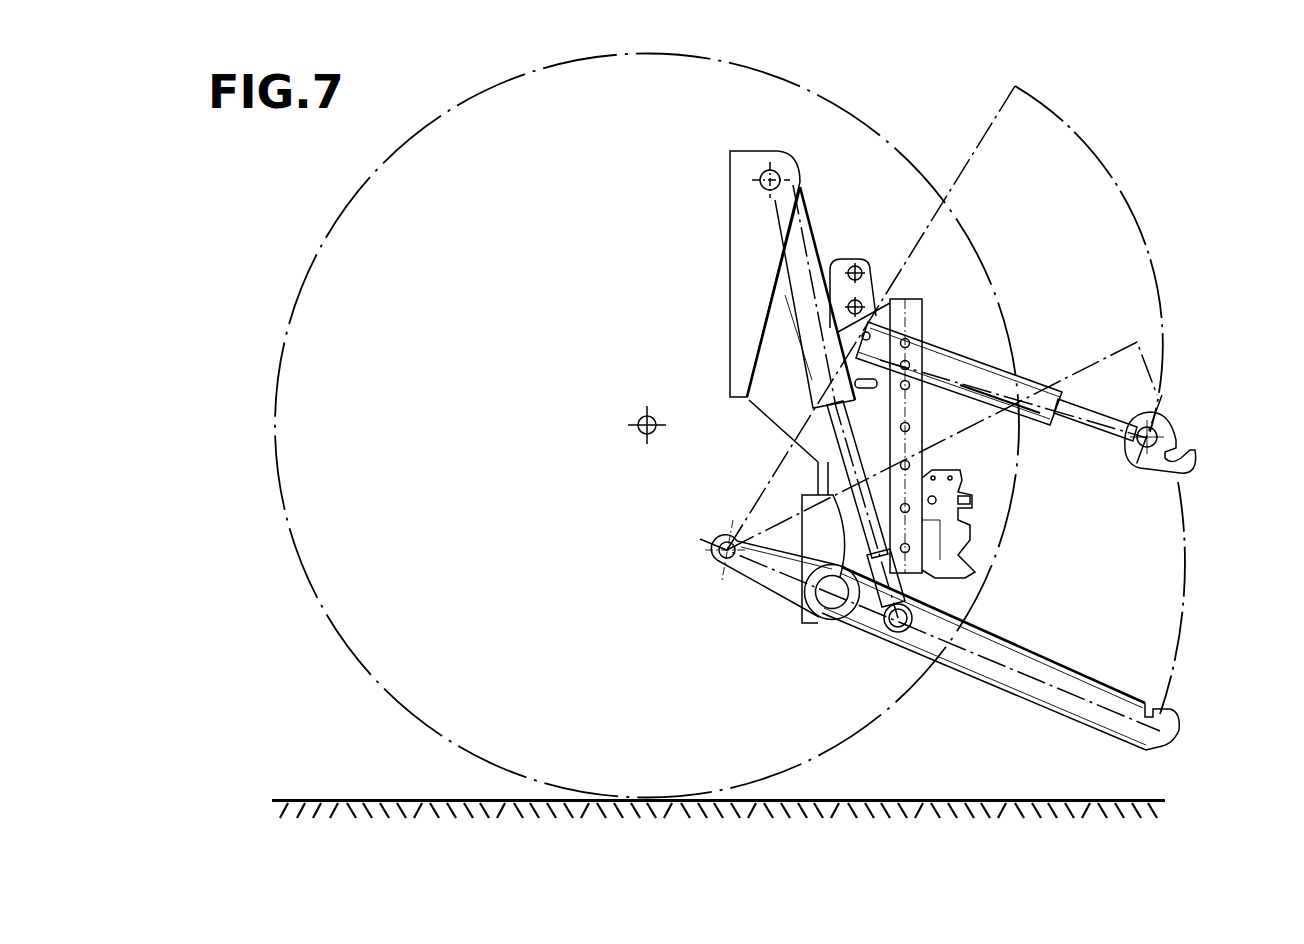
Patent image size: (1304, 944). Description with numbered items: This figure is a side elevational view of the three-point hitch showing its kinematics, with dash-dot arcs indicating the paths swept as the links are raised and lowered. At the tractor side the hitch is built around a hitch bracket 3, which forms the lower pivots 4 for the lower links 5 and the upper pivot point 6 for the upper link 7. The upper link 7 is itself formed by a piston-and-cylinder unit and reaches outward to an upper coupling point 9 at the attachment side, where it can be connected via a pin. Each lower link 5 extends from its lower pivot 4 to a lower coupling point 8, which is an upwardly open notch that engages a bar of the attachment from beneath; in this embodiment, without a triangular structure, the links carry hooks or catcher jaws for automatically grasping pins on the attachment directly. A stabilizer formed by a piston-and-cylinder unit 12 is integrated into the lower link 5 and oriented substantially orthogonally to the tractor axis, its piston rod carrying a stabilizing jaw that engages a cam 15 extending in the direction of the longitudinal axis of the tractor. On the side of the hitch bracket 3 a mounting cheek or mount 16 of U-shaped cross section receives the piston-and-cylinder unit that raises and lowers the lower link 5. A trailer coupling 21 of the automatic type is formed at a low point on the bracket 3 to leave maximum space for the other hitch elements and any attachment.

The hitch bracket 3 is at (848, 212).
The lower pivots 4 is at (712, 542).
The lower links 5 is at (993, 665).
The upper pivot point 6 is at (870, 326).
The upper link 7 is at (1020, 395).
The lower coupling points 8 is at (1190, 700).
The upper coupling point 9 is at (1198, 420).
The stabilizer piston-and-cylinder unit 12 is at (830, 594).
The cam 15 is at (812, 530).
The mounting cheeks or mounts 16 is at (748, 230).
The trailer coupling 21 is at (1000, 520).